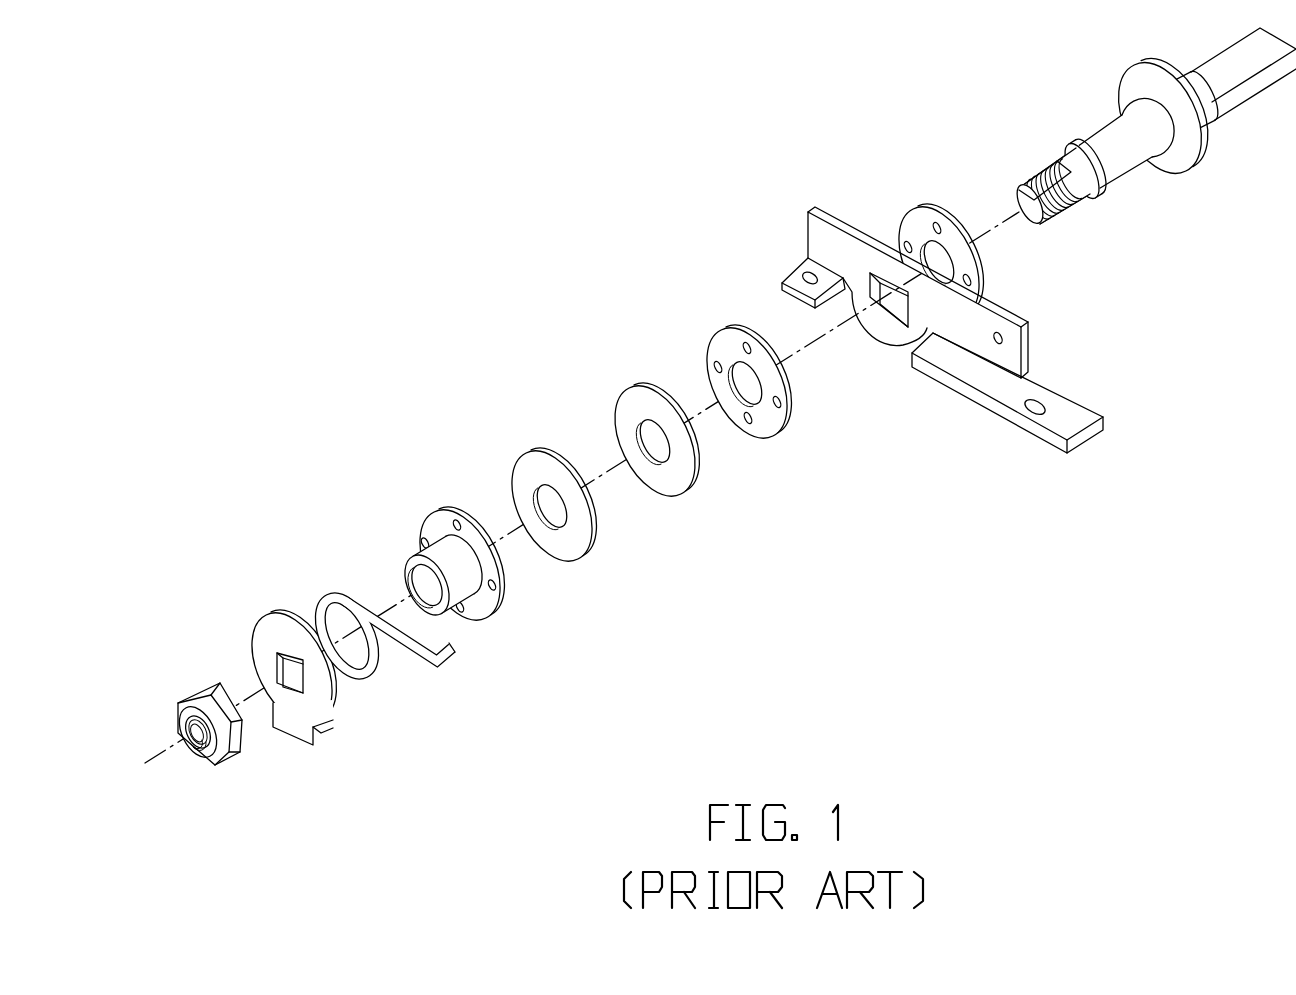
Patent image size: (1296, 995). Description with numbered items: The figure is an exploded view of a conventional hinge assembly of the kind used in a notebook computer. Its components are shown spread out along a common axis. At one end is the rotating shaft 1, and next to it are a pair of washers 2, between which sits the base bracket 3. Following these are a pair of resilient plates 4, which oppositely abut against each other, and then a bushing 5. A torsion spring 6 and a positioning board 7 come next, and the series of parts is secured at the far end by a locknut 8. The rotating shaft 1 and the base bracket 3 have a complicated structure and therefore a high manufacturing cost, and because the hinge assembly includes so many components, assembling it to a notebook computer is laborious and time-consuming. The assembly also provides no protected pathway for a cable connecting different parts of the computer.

The rotating shaft 1 is at (1120, 92).
The washers 2 is at (920, 222).
The base bracket 3 is at (1078, 418).
The resilient plates 4 is at (634, 407).
The bushing 5 is at (436, 530).
The torsion spring 6 is at (342, 594).
The positioning board 7 is at (268, 636).
The locknut 8 is at (197, 692).